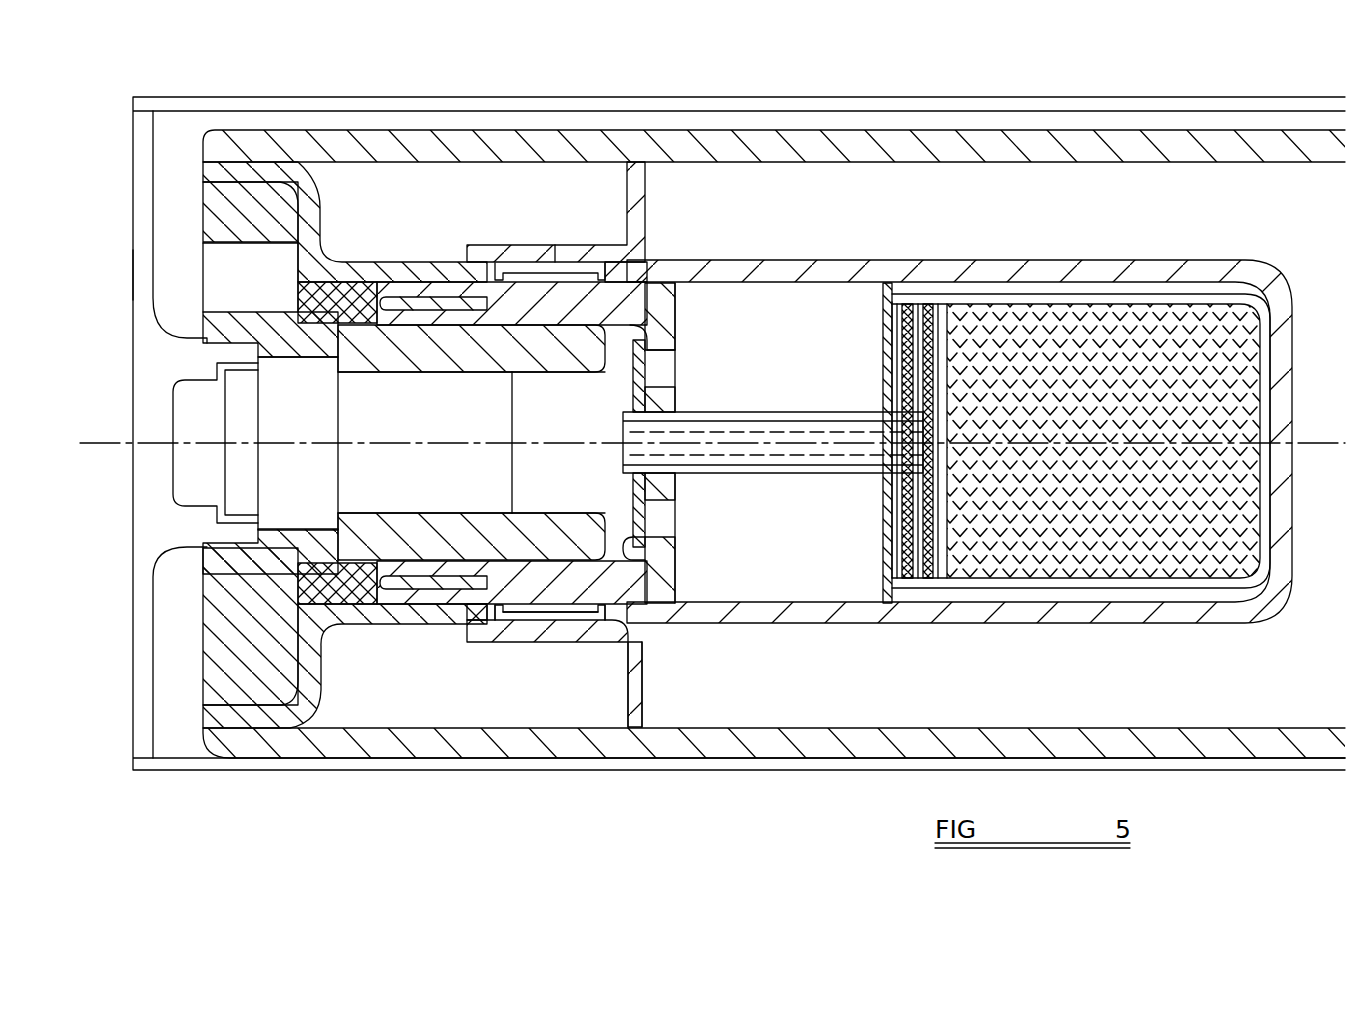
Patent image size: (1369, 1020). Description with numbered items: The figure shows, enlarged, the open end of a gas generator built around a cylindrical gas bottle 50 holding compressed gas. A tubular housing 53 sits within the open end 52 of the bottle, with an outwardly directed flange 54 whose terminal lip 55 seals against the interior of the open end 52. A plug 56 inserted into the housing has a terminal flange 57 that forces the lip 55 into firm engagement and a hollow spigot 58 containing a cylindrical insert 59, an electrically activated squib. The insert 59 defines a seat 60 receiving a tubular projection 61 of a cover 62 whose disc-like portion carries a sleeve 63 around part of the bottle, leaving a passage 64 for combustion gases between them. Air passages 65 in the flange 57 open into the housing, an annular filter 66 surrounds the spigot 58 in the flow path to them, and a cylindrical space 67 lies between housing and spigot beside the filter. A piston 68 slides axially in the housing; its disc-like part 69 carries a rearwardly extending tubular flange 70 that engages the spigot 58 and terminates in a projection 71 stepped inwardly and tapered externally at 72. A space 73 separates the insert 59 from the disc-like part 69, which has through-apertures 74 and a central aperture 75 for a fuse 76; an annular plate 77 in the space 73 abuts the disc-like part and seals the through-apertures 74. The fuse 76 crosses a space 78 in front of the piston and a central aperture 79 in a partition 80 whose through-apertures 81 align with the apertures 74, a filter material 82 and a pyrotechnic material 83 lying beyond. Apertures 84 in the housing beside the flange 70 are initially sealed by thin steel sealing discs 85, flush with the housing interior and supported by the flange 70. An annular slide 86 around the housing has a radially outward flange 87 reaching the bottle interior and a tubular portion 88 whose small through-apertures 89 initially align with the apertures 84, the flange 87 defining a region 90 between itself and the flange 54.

The cylindrical gas bottle 50 is at (1252, 138).
The open end 52 is at (306, 145).
The tubular housing 53 is at (1157, 270).
The outwardly directed flange 54 is at (320, 230).
The terminal lip 55 is at (256, 165).
The plug 56 is at (196, 605).
The terminal flange 57 is at (215, 692).
The hollow spigot 58 is at (428, 550).
The cylindrical insert 59 is at (363, 480).
The seat 60 is at (233, 388).
The tubular projection 61 is at (213, 352).
The cover 62 is at (133, 275).
The sleeve 63 is at (562, 105).
The passage 64 is at (908, 120).
The air passages 65 is at (223, 275).
The annular filter 66 is at (357, 287).
The cylindrical space 67 is at (427, 292).
The piston 68 is at (617, 297).
The disc-like part 69 is at (668, 330).
The tubular flange 70 is at (650, 303).
The rearwardly extending projection 71 is at (462, 307).
The tapered region 72 is at (403, 597).
The space 73 is at (543, 487).
The through-apertures 74 is at (677, 373).
The centrally located aperture 75 is at (677, 407).
The fuse 76 is at (772, 413).
The annular plate 77 is at (627, 553).
The space 78 is at (755, 560).
The central aperture 79 is at (885, 477).
The partition 80 is at (893, 560).
The through-apertures 81 is at (893, 517).
The filter material 82 is at (923, 497).
The pyrotechnic material 83 is at (1170, 543).
The apertures 84 is at (500, 608).
The sealing disc 85 is at (527, 607).
The slide 86 is at (548, 643).
The annular flange 87 is at (643, 710).
The tubular portion 88 is at (607, 630).
The through-apertures 89 is at (572, 630).
The region 90 is at (458, 705).